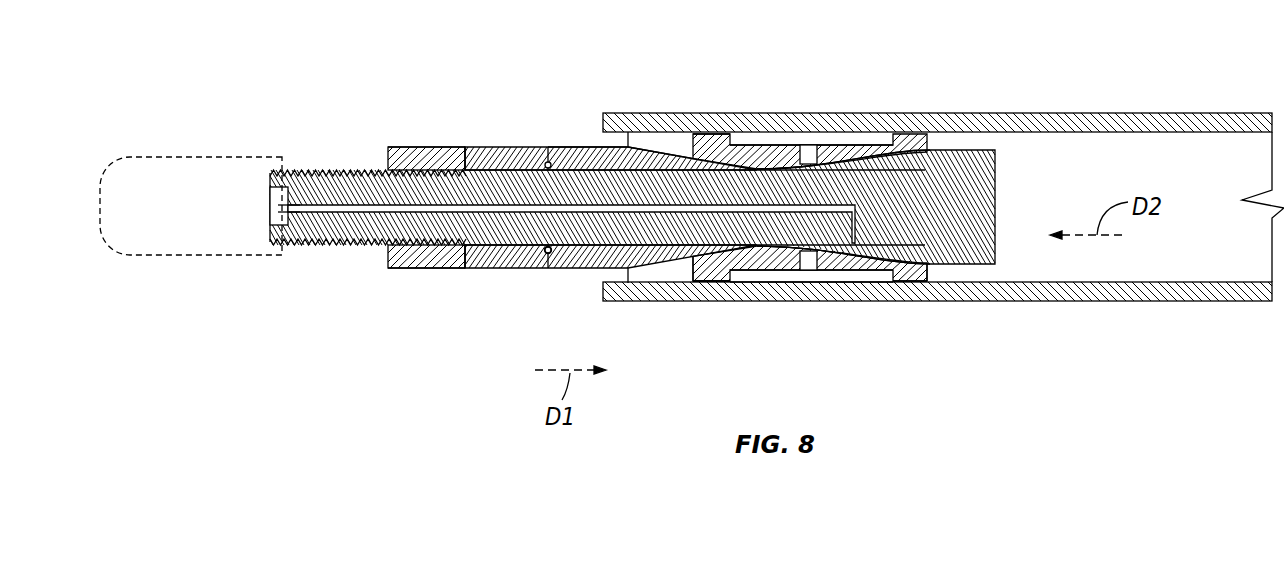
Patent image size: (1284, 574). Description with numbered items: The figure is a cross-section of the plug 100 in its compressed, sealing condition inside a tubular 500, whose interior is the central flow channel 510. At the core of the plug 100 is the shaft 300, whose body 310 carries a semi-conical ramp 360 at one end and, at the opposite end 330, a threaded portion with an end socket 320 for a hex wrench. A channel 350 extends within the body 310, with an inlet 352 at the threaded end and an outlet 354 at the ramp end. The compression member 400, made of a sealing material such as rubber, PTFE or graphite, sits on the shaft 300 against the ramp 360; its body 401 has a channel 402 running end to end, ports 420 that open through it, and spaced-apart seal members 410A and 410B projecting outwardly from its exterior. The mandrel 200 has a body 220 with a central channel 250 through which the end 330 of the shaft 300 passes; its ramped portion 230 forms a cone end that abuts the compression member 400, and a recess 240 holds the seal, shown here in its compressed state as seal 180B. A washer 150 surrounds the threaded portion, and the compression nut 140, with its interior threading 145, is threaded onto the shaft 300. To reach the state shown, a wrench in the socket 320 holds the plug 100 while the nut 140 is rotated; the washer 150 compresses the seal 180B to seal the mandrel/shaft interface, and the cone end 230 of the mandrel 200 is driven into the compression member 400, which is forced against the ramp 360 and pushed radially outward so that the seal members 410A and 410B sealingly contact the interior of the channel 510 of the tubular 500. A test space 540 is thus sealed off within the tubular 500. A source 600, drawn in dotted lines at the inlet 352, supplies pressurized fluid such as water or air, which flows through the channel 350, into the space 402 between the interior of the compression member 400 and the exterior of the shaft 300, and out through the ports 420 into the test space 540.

The plug 100 is at (428, 284).
The compression nut 140 is at (410, 147).
The interior threading 145 is at (388, 242).
The washer 150 is at (500, 147).
The seal (compressed) 180B is at (546, 252).
The mandrel 200 is at (627, 138).
The mandrel body 220 is at (575, 146).
The ramped portion (cone end) 230 is at (677, 146).
The recess 240 is at (557, 255).
The central channel 250 is at (517, 237).
The shaft 300 is at (997, 182).
The shaft body 310 is at (645, 232).
The end socket 320 is at (268, 192).
The shaft end 330 is at (332, 170).
The channel 350 is at (855, 224).
The inlet (port) 352 is at (288, 208).
The outlet 354 is at (932, 262).
The ramp 360 is at (913, 148).
The compression member 400 is at (838, 136).
The compression member body 401 is at (745, 146).
The channel (space) 402 is at (792, 146).
The first seal member 410A is at (713, 281).
The second seal member 410B is at (910, 281).
The ports 420 is at (810, 270).
The tubular 500 is at (943, 169).
The central flow channel 510 is at (1172, 133).
The test space 540 is at (850, 278).
The pressurized fluid source 600 is at (188, 155).